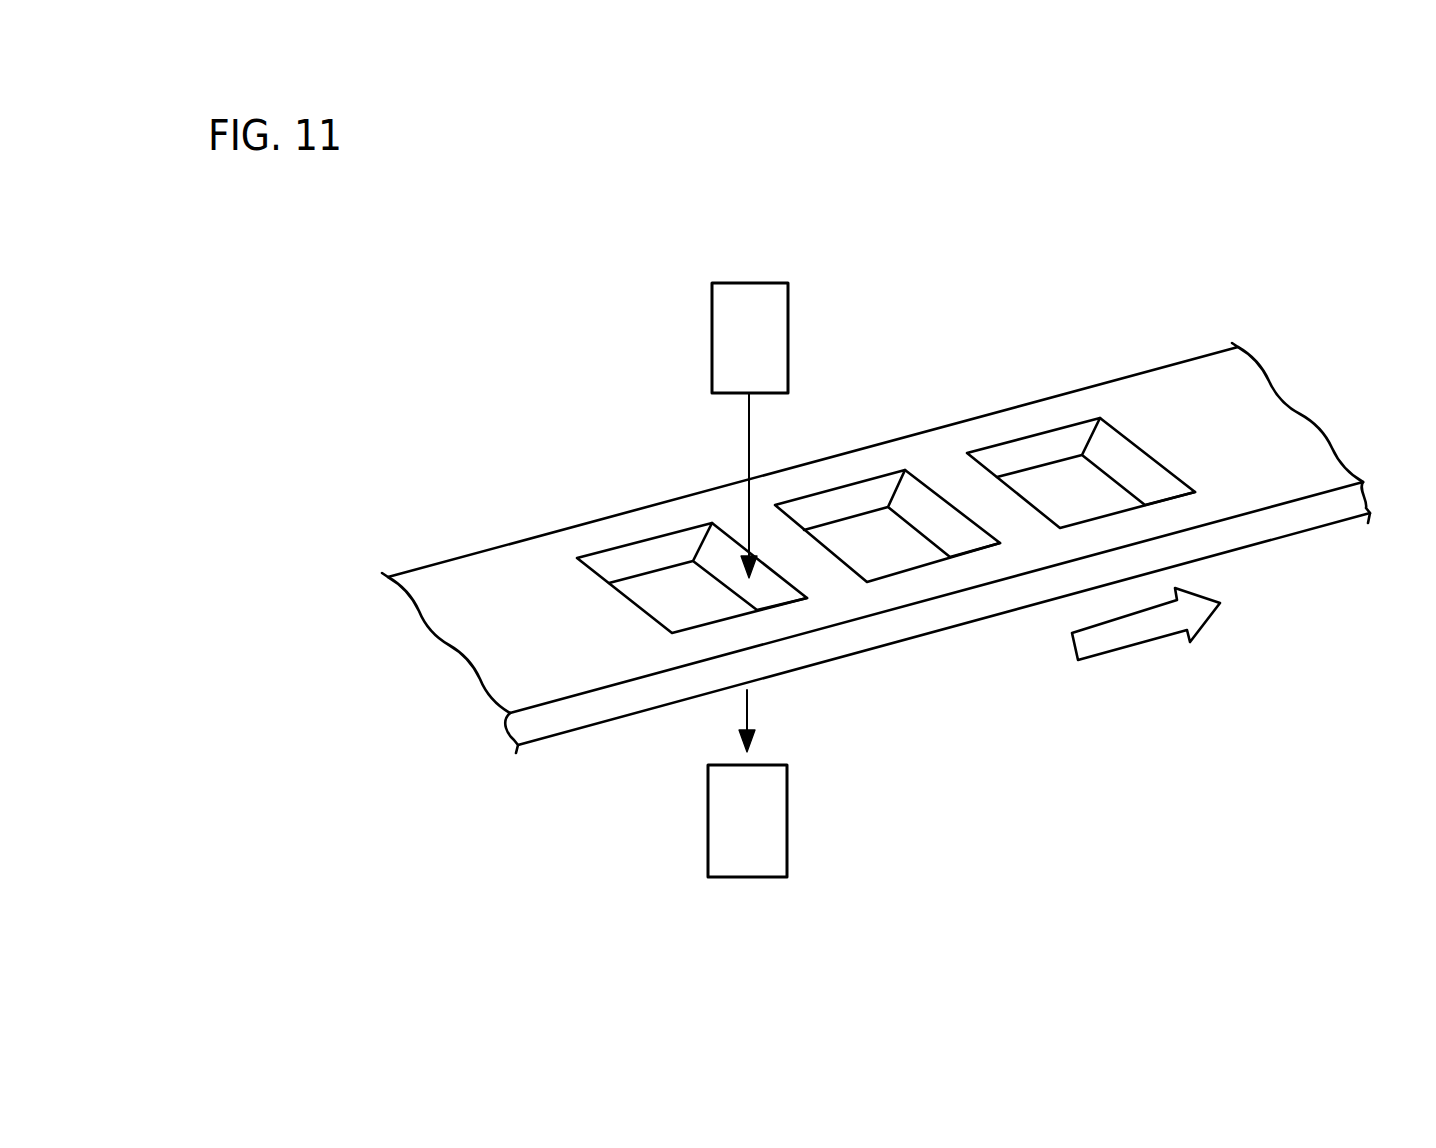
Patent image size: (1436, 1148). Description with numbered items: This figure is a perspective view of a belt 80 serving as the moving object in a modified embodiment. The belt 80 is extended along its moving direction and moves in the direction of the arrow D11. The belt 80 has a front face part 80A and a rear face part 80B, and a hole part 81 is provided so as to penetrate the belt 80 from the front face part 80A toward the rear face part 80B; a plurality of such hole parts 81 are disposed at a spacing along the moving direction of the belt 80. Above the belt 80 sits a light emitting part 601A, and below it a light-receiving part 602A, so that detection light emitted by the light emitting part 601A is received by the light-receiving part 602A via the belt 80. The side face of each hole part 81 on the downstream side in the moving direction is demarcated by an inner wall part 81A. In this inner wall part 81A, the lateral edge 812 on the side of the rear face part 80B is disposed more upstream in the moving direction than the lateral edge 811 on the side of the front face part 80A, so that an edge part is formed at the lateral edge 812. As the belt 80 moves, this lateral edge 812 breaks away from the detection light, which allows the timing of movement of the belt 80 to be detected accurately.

The belt 80 is at (1190, 380).
The front face part 80A is at (482, 572).
The rear face part 80B is at (557, 700).
The hole part 81 is at (880, 557).
The lateral edge 811 is at (727, 535).
The inner wall part 81A is at (720, 551).
The lateral edge 812 is at (707, 576).
The light emitting part 601A is at (777, 318).
The light-receiving part 602A is at (773, 827).
The arrow D11 is at (1138, 638).